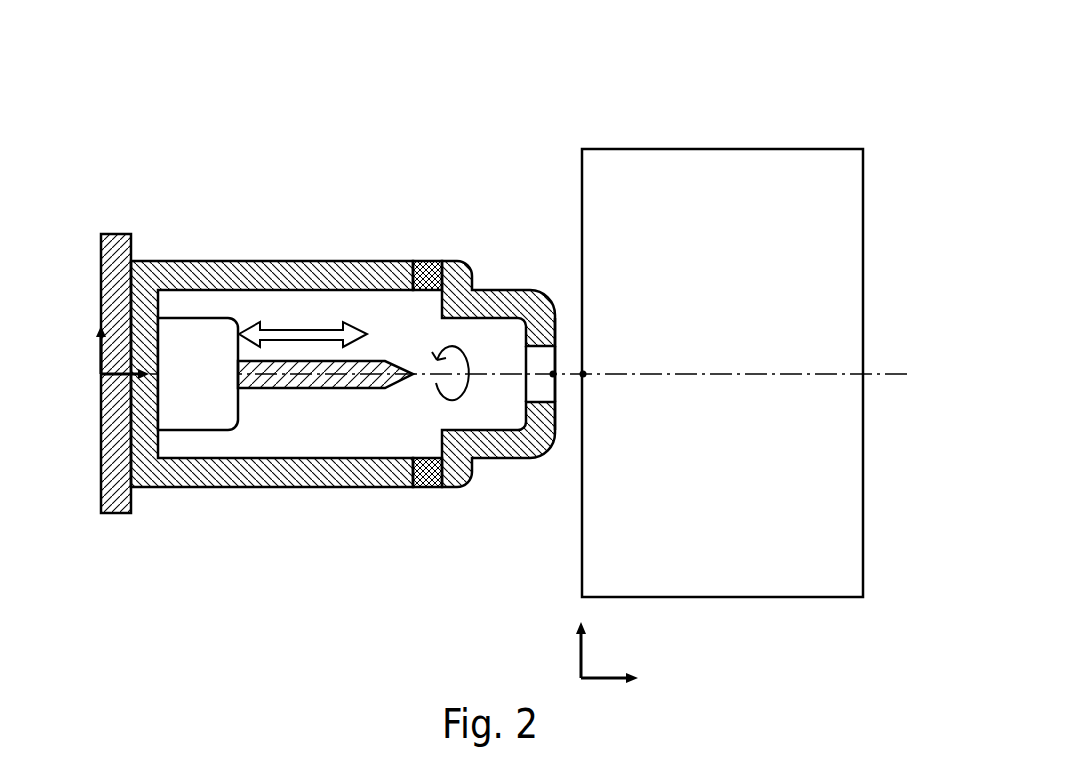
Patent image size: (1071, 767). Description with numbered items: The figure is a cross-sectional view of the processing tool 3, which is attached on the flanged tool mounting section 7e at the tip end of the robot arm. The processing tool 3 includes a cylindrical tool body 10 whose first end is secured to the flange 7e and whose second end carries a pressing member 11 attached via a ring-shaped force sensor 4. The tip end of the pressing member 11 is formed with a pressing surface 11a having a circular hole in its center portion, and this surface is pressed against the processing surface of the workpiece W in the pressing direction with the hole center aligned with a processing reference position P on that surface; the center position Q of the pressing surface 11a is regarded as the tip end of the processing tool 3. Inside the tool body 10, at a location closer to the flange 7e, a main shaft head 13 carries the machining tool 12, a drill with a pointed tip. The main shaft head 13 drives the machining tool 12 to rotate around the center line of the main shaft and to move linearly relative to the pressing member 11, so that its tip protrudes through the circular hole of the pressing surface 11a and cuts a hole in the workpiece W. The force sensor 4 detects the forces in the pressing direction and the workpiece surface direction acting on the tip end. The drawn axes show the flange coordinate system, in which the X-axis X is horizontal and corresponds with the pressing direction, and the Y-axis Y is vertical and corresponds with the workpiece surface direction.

The processing tool 3 is at (345, 367).
The tool body 10 is at (285, 488).
The force sensor 4 is at (424, 488).
The pressing member 11 is at (493, 460).
The pressing surface 11a is at (560, 320).
The machining tool 12 is at (327, 390).
The main shaft head 13 is at (240, 410).
The flanged tool mounting section 7e is at (112, 515).
The workpiece W is at (780, 148).
The processing reference position P is at (584, 373).
The center position of the pressing surface Q is at (553, 377).
The X-axis X is at (126, 391).
The Y-axis Y is at (91, 337).